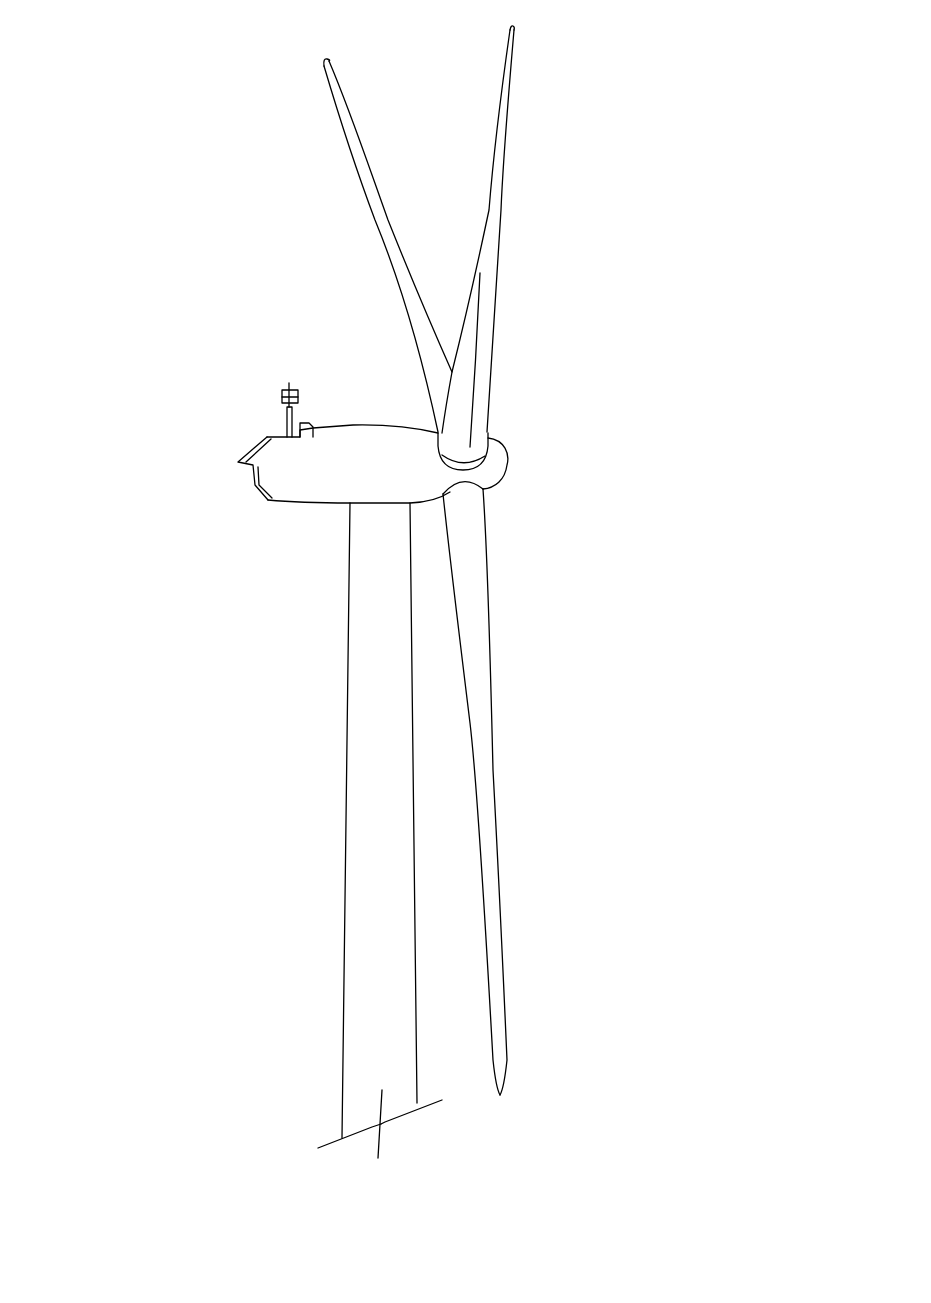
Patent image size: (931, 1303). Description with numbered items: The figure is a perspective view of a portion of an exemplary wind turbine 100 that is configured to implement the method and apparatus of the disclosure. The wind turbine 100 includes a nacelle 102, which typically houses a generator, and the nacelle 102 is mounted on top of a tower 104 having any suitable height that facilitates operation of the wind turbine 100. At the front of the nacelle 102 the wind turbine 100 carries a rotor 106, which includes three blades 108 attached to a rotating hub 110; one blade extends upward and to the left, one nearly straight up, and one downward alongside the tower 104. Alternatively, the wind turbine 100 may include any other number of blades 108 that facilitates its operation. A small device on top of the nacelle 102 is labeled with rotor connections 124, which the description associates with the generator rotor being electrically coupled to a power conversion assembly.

The wind turbine 100 is at (211, 190).
The nacelle 102 is at (307, 508).
The tower 104 is at (345, 895).
The rotor 106 is at (618, 335).
The blades 108 is at (388, 213).
The rotating hub 110 is at (505, 458).
The rotor connections 124 is at (283, 420).